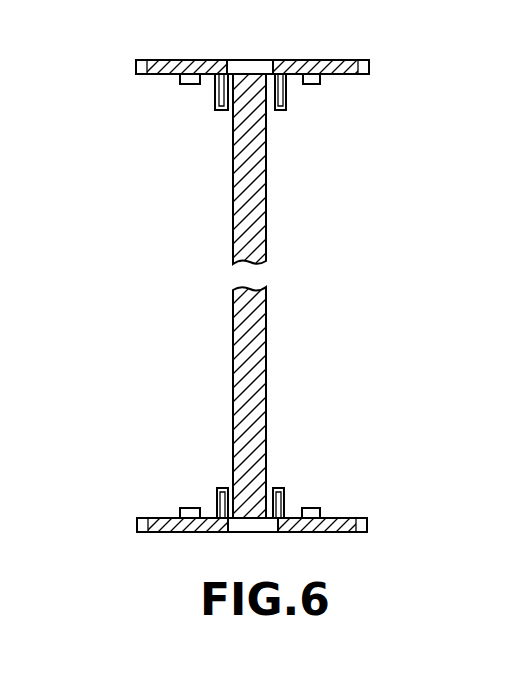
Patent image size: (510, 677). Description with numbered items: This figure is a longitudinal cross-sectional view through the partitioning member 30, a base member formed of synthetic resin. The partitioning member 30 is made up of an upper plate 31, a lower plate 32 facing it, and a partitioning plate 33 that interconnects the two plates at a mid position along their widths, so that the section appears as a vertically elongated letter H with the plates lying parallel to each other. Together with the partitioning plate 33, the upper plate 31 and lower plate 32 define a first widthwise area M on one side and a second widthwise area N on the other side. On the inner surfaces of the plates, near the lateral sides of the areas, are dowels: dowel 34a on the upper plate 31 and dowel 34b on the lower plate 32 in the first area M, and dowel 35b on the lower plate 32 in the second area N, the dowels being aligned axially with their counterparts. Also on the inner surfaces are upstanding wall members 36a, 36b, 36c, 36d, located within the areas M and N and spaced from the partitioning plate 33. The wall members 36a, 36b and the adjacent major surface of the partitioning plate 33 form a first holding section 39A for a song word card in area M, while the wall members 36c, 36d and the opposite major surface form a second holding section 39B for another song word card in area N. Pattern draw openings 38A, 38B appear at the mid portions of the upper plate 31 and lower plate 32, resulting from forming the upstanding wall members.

The partitioning member 30 is at (392, 255).
The upper plate 31 is at (178, 63).
The lower plate 32 is at (340, 533).
The partitioning plate 33 is at (267, 239).
The dowel 34a is at (190, 85).
The dowel 34b is at (187, 508).
The dowel 35b is at (316, 85).
The upstanding wall member 36a is at (222, 111).
The upstanding wall member 36b is at (221, 487).
The upstanding wall member 36c is at (281, 111).
The upstanding wall member 36d is at (288, 487).
The pattern draw opening 38A is at (260, 68).
The pattern draw opening 38B is at (257, 533).
The first holding section 39A is at (228, 481).
The second holding section 39B is at (270, 479).
The first widthwise area M is at (139, 405).
The second widthwise area N is at (346, 404).